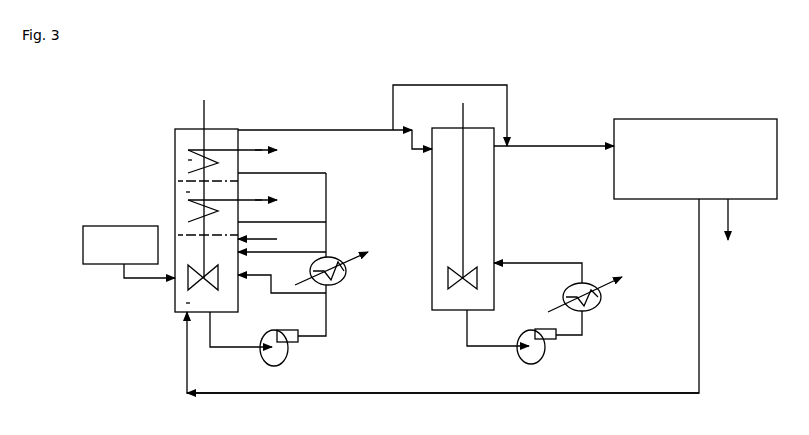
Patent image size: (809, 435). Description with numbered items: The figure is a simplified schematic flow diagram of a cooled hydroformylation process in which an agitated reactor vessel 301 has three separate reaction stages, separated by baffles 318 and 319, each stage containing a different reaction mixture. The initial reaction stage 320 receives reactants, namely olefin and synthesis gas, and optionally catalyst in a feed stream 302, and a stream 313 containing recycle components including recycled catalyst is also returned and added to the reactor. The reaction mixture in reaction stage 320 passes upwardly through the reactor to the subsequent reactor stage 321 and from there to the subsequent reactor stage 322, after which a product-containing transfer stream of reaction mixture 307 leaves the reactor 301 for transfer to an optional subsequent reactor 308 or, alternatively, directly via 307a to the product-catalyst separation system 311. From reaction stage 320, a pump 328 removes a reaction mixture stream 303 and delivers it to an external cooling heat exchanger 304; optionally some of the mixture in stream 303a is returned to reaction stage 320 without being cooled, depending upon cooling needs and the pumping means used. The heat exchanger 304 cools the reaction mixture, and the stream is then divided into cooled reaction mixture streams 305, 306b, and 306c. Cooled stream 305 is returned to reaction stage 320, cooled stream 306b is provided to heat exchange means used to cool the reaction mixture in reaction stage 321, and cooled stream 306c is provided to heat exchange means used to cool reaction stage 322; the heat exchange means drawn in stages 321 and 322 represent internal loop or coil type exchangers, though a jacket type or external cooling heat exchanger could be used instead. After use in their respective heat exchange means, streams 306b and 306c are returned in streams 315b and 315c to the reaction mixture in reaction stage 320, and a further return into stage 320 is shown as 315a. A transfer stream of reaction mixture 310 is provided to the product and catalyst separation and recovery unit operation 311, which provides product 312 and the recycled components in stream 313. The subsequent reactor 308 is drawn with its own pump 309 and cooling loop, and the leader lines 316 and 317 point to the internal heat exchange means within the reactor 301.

The agitated reactor vessel 301 is at (191, 206).
The feed stream 302 is at (129, 262).
The reaction mixture stream 303 is at (241, 339).
The optional stream 303a is at (282, 295).
The external cooling heat exchanger 304 is at (331, 276).
The cooled reaction mixture stream 305 is at (282, 263).
The cooled reaction mixture stream 306b is at (309, 221).
The cooled reaction mixture stream 306c is at (309, 172).
The transfer stream of reaction mixture 307 is at (335, 134).
The transfer stream bypass 307a is at (450, 109).
The subsequent reactor 308 is at (518, 207).
The pump 309 is at (520, 337).
The transfer stream of reaction mixture 310 is at (554, 136).
The product and catalyst separation and recovery unit operation 311 is at (695, 148).
The product 312 is at (746, 233).
The recycle stream 313 is at (426, 296).
The feed inlet 315a is at (279, 240).
The return stream 315b is at (270, 207).
The return stream 315c is at (257, 147).
The mixing zone 316 is at (192, 147).
The mixing zone 317 is at (188, 200).
The baffle 318 is at (182, 180).
The baffle 319 is at (183, 235).
The initial reaction stage 320 is at (188, 303).
The subsequent reactor stage 321 is at (188, 192).
The subsequent reactor stage 322 is at (185, 160).
The pump 328 is at (293, 330).